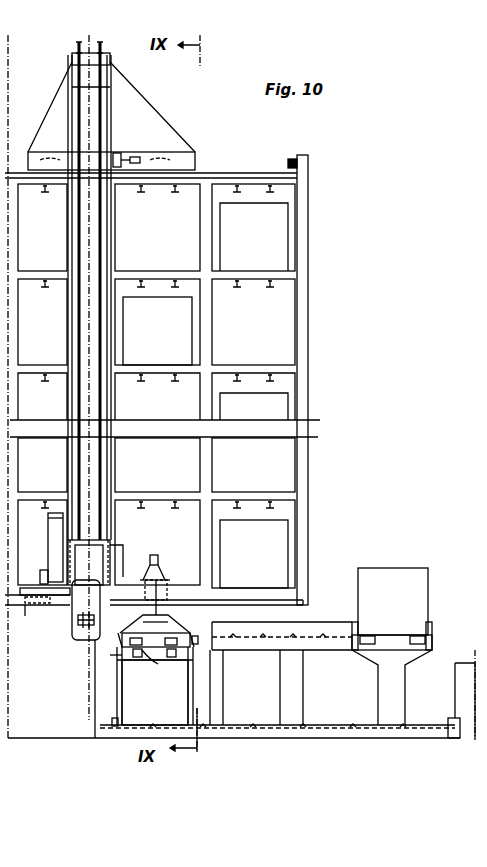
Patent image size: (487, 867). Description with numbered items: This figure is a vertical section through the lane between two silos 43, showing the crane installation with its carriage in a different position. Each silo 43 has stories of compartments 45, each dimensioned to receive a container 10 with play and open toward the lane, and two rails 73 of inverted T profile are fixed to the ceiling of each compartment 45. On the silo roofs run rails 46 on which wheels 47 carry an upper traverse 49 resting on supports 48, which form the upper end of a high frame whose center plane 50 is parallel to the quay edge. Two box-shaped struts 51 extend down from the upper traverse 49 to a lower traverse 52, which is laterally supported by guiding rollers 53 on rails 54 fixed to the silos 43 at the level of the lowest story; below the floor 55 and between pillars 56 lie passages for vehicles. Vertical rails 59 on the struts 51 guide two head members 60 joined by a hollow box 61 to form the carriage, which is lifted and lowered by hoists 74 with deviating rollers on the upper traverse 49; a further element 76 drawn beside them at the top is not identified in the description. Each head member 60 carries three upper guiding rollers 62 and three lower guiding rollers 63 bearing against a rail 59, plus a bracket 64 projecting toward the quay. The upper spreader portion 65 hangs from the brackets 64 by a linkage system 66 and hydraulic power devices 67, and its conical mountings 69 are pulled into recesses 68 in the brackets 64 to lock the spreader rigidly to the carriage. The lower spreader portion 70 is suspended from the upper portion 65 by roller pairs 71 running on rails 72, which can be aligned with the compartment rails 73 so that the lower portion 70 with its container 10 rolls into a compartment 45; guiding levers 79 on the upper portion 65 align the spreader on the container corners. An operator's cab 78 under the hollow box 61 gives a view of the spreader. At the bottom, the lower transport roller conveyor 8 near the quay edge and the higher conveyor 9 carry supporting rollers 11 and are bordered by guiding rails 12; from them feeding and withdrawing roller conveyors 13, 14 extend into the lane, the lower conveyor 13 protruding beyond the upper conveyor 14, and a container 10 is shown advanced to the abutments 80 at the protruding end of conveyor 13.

The transport roller conveyor 8 is at (452, 722).
The transport roller conveyor 9 is at (392, 652).
The container 10 is at (258, 243).
The supporting rollers 11 is at (416, 646).
The guiding rails 12 is at (355, 624).
The feeding and withdrawing roller conveyor 13 is at (272, 725).
The feeding and withdrawing roller conveyor 14 is at (282, 640).
The silo 43 is at (308, 190).
The compartment 45 is at (46, 241).
The rails 46 is at (238, 173).
The wheels 47 is at (195, 152).
The supports 48 is at (148, 120).
The upper traverse 49 is at (84, 72).
The center plane 50 is at (90, 240).
The box-shaped struts 51 is at (72, 318).
The lower traverse 52 is at (58, 605).
The guiding rollers 53 is at (25, 616).
The rails 54 is at (292, 603).
The floor 55 is at (266, 600).
The pillars 56 is at (303, 690).
The vertical rails 59 is at (77, 400).
The head members 60 is at (48, 558).
The hollow box 61 is at (96, 545).
The guiding rollers 62 is at (48, 519).
The guiding rollers 63 is at (118, 552).
The bracket 64 is at (168, 578).
The upper spreader portion 65 is at (182, 633).
The linkage system 66 is at (150, 576).
The hydraulic power devices 67 is at (158, 556).
The recess 68 is at (148, 596).
The conical mounting 69 is at (143, 624).
The lower spreader portion 70 is at (122, 655).
The roller pairs 71 is at (162, 652).
The rails 72 is at (143, 642).
The rails 73 is at (175, 192).
The hoists 74 is at (103, 45).
The mast rod 76 is at (77, 45).
The operator's cab 78 is at (74, 630).
The guiding levers 79 is at (195, 665).
The abutments 80 is at (193, 640).